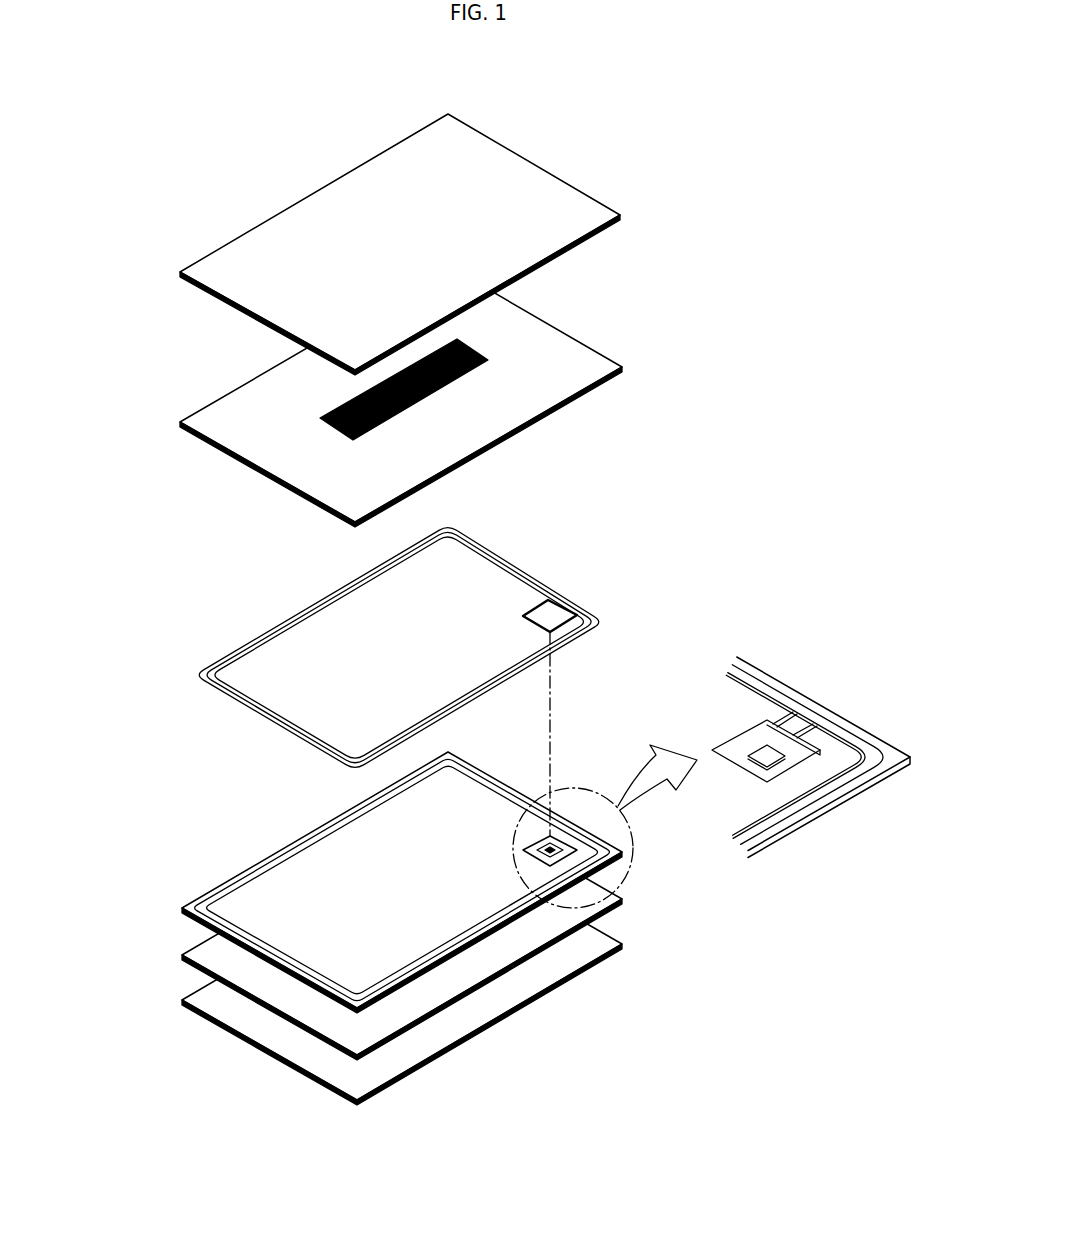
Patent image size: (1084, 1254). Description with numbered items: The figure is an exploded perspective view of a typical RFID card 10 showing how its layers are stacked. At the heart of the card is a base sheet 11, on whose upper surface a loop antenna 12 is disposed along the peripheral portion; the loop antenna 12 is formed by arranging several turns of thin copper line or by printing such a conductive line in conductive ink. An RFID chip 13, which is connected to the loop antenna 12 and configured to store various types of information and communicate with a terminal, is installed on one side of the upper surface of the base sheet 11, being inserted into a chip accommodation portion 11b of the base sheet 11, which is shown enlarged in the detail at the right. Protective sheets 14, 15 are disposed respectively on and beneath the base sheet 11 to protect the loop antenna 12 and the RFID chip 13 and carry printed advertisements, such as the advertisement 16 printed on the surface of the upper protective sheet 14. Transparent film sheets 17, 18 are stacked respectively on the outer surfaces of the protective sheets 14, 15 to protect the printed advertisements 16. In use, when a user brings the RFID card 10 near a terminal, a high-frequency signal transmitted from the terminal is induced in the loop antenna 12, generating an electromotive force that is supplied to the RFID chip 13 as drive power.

The RFID card 10 is at (580, 140).
The base sheet 11 is at (248, 907).
The chip accommodation portion 11b is at (748, 742).
The loop antenna 12 is at (230, 650).
The RFID chip 13 is at (548, 620).
The protective sheet 14 is at (237, 422).
The protective sheet 15 is at (227, 958).
The advertisement 16 is at (470, 352).
The transparent film sheet 17 is at (257, 245).
The transparent film sheet 18 is at (232, 1007).